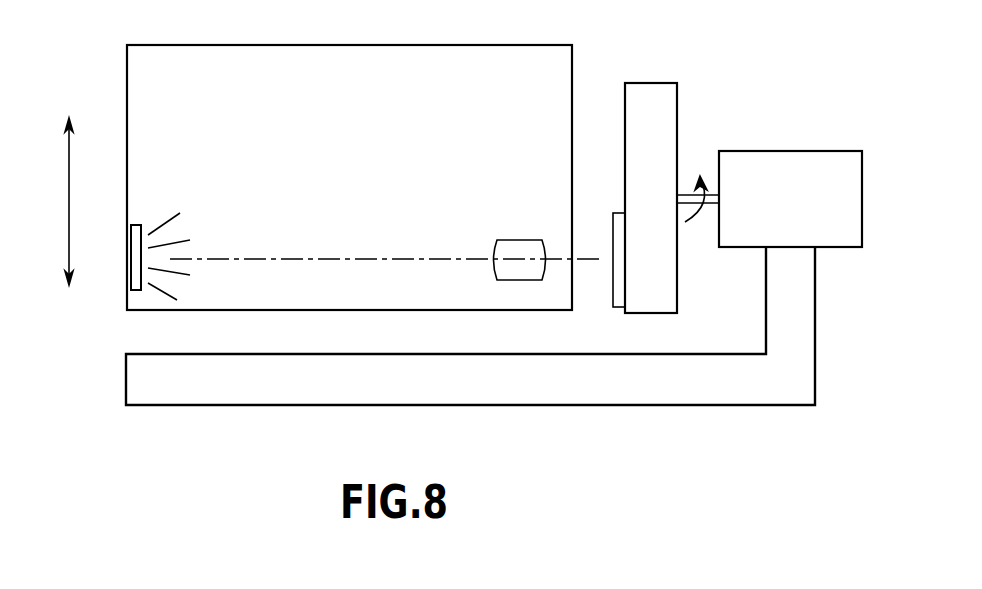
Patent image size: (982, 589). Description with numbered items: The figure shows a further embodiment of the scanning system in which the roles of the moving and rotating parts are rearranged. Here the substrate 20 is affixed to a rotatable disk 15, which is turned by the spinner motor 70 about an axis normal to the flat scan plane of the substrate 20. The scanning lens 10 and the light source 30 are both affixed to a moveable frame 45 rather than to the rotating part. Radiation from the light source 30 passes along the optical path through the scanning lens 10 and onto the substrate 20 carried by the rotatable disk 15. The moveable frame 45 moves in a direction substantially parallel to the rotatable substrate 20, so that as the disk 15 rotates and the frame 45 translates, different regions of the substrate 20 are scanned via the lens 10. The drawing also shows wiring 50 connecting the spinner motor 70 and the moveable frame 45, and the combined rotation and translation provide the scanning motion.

The scanning lens 10 is at (518, 268).
The rotatable disk 15 is at (646, 92).
The substrate 20 is at (618, 300).
The light source 30 is at (136, 270).
The moveable frame 45 is at (260, 55).
The wiring 50 is at (708, 390).
The spinner motor 70 is at (852, 219).